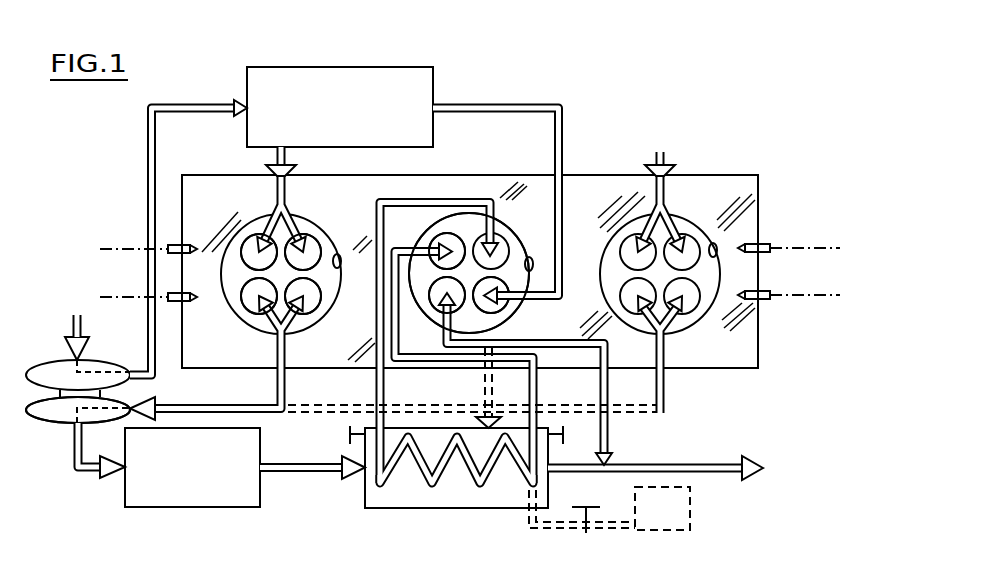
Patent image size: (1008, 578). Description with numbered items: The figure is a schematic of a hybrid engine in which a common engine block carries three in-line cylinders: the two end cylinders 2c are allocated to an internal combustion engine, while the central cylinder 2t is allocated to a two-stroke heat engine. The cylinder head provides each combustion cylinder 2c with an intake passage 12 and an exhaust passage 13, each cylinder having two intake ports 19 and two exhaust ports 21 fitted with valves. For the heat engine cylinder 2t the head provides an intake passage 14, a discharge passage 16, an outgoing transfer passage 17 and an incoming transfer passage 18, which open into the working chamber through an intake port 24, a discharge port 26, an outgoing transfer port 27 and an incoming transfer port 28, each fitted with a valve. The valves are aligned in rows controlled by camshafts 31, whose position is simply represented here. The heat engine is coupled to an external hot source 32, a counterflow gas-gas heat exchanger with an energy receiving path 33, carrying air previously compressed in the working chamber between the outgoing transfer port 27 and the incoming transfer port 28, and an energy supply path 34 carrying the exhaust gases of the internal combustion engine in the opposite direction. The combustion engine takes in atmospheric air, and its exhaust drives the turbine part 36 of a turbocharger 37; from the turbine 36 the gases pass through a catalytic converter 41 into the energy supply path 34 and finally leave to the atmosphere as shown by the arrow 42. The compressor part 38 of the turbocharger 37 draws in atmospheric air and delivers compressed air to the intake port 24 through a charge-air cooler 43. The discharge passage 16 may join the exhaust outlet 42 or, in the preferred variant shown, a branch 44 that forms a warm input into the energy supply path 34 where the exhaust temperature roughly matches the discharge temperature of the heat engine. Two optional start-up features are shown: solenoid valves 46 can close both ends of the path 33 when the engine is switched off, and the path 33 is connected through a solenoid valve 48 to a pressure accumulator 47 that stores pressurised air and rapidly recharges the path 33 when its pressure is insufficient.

The cylinder of the internal combustion engine 2c is at (344, 252).
The cylinder of the heat engine 2t is at (527, 266).
The intake passage 12 is at (276, 193).
The exhaust passage 13 is at (277, 343).
The intake passage 14 is at (553, 198).
The discharge passage 16 is at (444, 329).
The outgoing transfer passage 17 is at (412, 248).
The incoming transfer passage 18 is at (440, 215).
The intake port 19 is at (242, 238).
The exhaust port 21 is at (242, 303).
The intake port 24 is at (510, 313).
The discharge port 26 is at (430, 306).
The outgoing transfer port 27 is at (430, 266).
The incoming transfer port 28 is at (506, 236).
The camshaft 31 is at (168, 244).
The external hot source 32 is at (435, 500).
The energy receiving path 33 is at (470, 484).
The energy supply path 34 is at (385, 497).
The turbine part 36 is at (48, 424).
The turbocharger 37 is at (28, 393).
The compressor part 38 is at (33, 362).
The catalytic converter 41 is at (145, 508).
The exhaust outlet 42 is at (695, 465).
The charge-air cooler 43 is at (297, 66).
The branch 44 is at (478, 430).
The solenoid valve 46 is at (352, 451).
The pressure accumulator 47 is at (655, 530).
The solenoid valve 48 is at (577, 525).